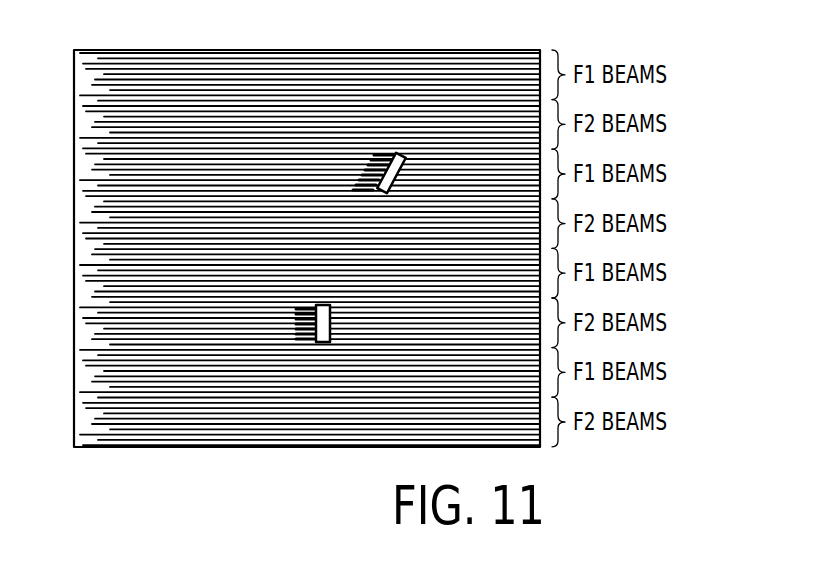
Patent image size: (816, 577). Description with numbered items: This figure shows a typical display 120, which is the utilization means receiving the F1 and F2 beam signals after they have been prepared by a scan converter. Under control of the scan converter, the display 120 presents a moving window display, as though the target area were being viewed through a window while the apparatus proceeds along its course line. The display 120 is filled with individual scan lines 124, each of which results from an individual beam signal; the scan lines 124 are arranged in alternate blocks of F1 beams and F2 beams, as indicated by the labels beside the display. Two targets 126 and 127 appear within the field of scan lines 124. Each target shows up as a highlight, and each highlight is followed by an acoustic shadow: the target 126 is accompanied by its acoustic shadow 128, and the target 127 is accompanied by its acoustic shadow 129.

The display 120 is at (80, 510).
The scan lines 124 is at (318, 83).
The target 126 is at (408, 156).
The target 127 is at (327, 344).
The acoustic shadow 128 is at (356, 166).
The acoustic shadow 129 is at (296, 326).